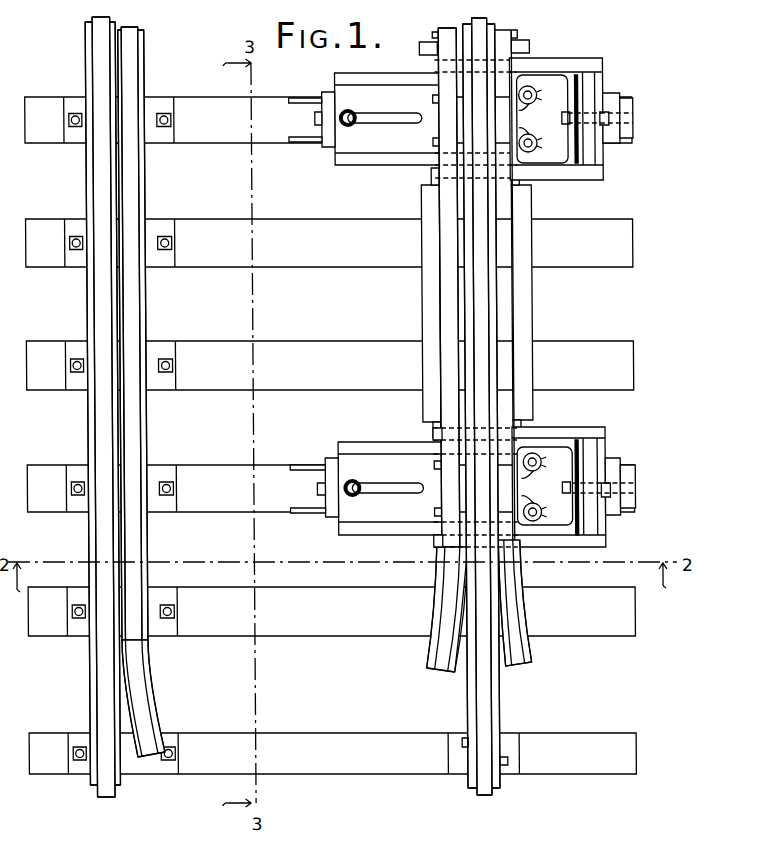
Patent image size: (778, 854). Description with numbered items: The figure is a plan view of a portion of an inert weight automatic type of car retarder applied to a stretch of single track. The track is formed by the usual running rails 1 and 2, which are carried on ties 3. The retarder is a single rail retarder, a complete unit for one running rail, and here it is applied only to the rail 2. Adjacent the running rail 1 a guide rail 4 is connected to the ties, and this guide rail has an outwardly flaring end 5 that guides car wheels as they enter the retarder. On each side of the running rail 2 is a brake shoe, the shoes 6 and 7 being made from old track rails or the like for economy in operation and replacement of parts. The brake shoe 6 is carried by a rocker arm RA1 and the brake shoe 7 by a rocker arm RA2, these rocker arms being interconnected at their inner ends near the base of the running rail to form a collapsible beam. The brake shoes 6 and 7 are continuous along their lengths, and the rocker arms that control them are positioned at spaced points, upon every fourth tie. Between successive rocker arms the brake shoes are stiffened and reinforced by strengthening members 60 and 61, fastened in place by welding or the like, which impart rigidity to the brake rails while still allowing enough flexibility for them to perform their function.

The track rail 1 is at (104, 793).
The track rail 2 is at (482, 787).
The ties 3 is at (367, 767).
The guide rail 4 is at (136, 534).
The outwardly flaring end 5 is at (140, 702).
The brake shoe 6 is at (512, 660).
The brake shoe 7 is at (440, 660).
The strengthening member 60 is at (426, 303).
The strengthening member 61 is at (520, 312).
The rocker arm RA1 is at (550, 431).
The rocker arm RA2 is at (387, 446).